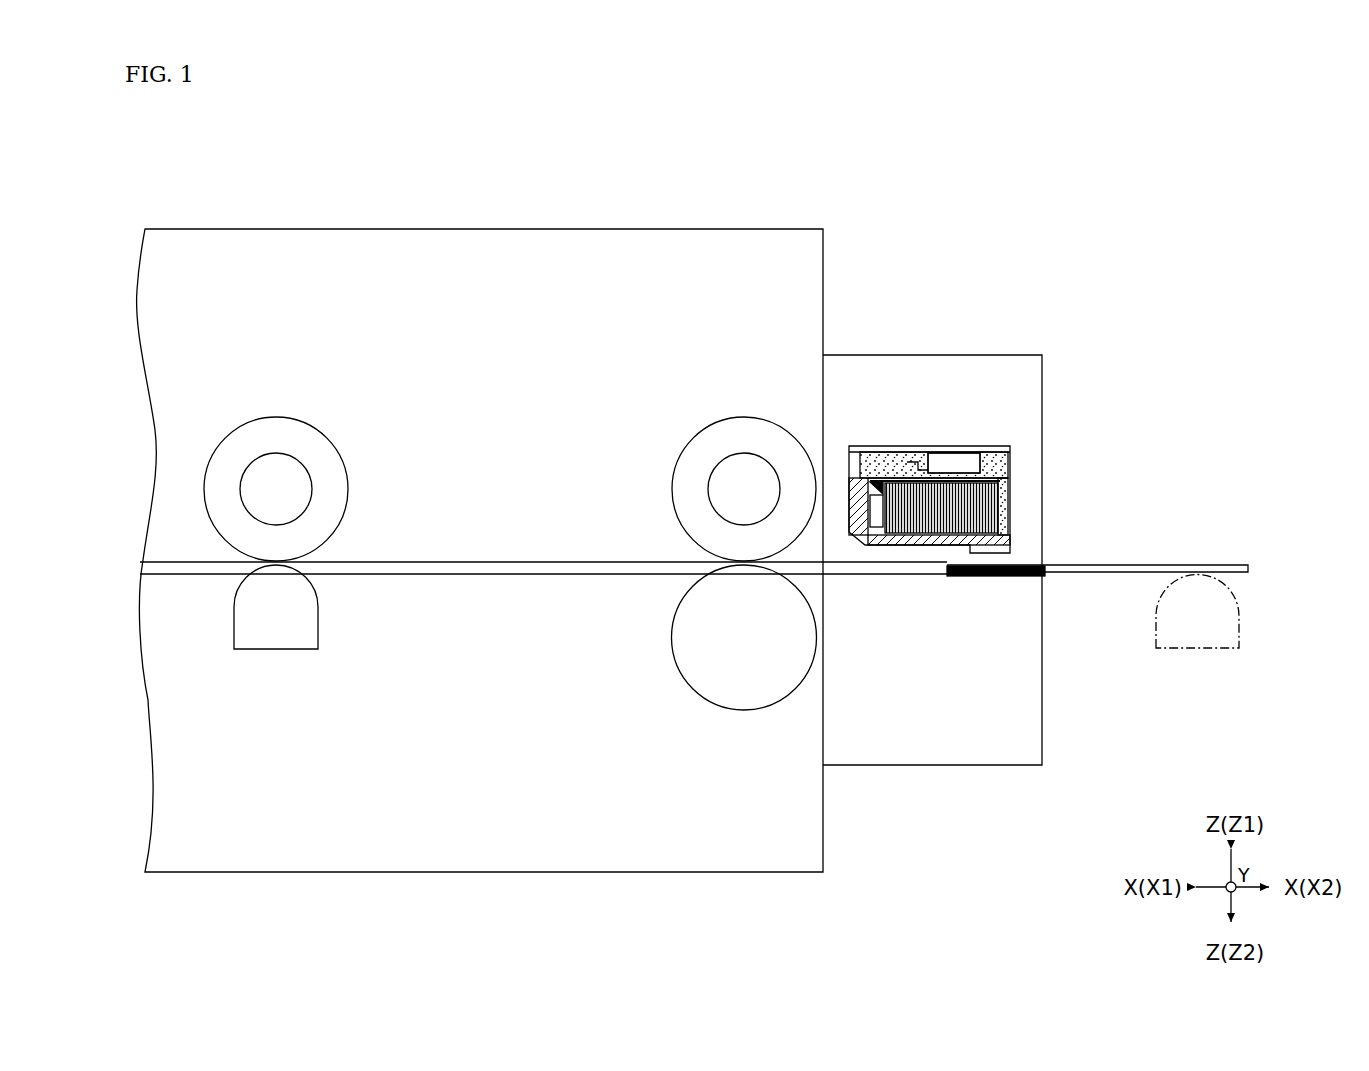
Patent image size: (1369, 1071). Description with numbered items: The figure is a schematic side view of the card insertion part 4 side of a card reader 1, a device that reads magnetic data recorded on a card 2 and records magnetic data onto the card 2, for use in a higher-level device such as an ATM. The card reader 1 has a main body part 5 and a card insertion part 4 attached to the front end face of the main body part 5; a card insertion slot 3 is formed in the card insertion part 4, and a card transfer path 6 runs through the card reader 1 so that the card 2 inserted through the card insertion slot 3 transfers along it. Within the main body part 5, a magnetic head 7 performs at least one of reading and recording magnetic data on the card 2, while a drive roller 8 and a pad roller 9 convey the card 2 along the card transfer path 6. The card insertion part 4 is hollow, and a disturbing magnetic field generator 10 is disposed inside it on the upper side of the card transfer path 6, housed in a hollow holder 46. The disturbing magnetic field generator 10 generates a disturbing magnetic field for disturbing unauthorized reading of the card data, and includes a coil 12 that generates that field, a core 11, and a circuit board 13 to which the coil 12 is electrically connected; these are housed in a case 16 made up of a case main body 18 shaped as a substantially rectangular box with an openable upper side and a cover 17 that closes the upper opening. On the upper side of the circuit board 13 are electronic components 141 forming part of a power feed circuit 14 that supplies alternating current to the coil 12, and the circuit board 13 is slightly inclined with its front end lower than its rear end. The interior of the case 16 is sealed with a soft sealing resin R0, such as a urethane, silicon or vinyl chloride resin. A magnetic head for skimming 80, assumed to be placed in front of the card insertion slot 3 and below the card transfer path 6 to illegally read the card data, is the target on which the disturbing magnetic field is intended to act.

The card reader 1 is at (1118, 199).
The card 2 is at (1220, 565).
The card insertion slot 3 is at (1056, 560).
The card insertion part 4 is at (1005, 354).
The main body part 5 is at (770, 228).
The card transfer path 6 is at (512, 562).
The magnetic head 7 is at (275, 649).
The drive roller 8 is at (265, 416).
The pad roller 9 is at (744, 710).
The disturbing magnetic field generator 10 is at (985, 503).
The core 11 is at (872, 540).
The coil 12 is at (905, 542).
The circuit board 13 is at (884, 465).
The power feed circuit 14 is at (976, 422).
The electronic component 141 is at (960, 465).
The case 16 is at (997, 468).
The cover 17 is at (1003, 506).
The case main body 18 is at (938, 479).
The holder 46 is at (925, 550).
The magnetic head for skimming 80 is at (1239, 641).
The sealing resin R0 is at (897, 450).